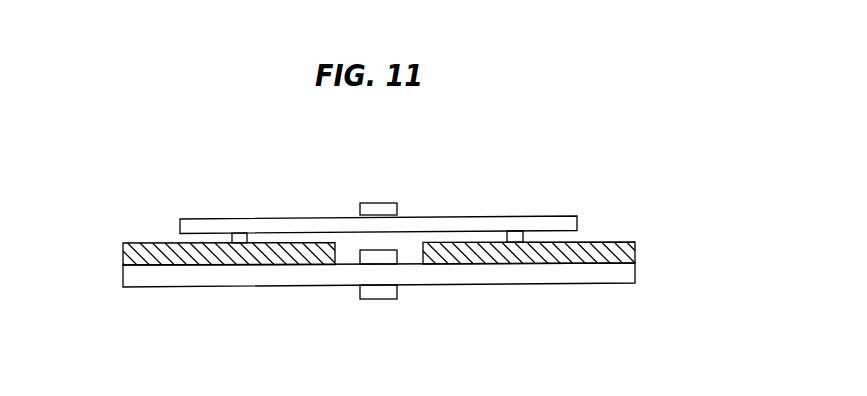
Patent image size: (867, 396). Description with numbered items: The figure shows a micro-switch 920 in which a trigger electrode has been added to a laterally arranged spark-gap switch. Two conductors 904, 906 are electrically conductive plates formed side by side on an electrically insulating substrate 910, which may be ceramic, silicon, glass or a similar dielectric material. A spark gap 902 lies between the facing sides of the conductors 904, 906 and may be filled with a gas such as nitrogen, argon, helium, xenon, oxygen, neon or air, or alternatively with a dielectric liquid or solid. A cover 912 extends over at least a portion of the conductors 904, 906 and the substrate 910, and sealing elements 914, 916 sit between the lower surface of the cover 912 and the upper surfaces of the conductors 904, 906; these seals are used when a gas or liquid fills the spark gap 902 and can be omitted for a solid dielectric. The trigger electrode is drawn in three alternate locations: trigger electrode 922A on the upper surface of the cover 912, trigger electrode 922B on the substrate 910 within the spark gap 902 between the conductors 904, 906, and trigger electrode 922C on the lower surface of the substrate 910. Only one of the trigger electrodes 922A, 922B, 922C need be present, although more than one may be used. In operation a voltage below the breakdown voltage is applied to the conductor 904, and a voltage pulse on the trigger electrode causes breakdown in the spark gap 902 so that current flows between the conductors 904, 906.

The spark gap 902 is at (342, 231).
The conductor 904 is at (123, 252).
The conductor 906 is at (636, 247).
The substrate 910 is at (123, 277).
The cover 912 is at (180, 226).
The sealing element 914 is at (242, 239).
The sealing element 916 is at (517, 232).
The micro-switch 920 is at (619, 178).
The trigger electrode 922A is at (382, 203).
The trigger electrode 922B is at (358, 256).
The trigger electrode 922C is at (385, 297).